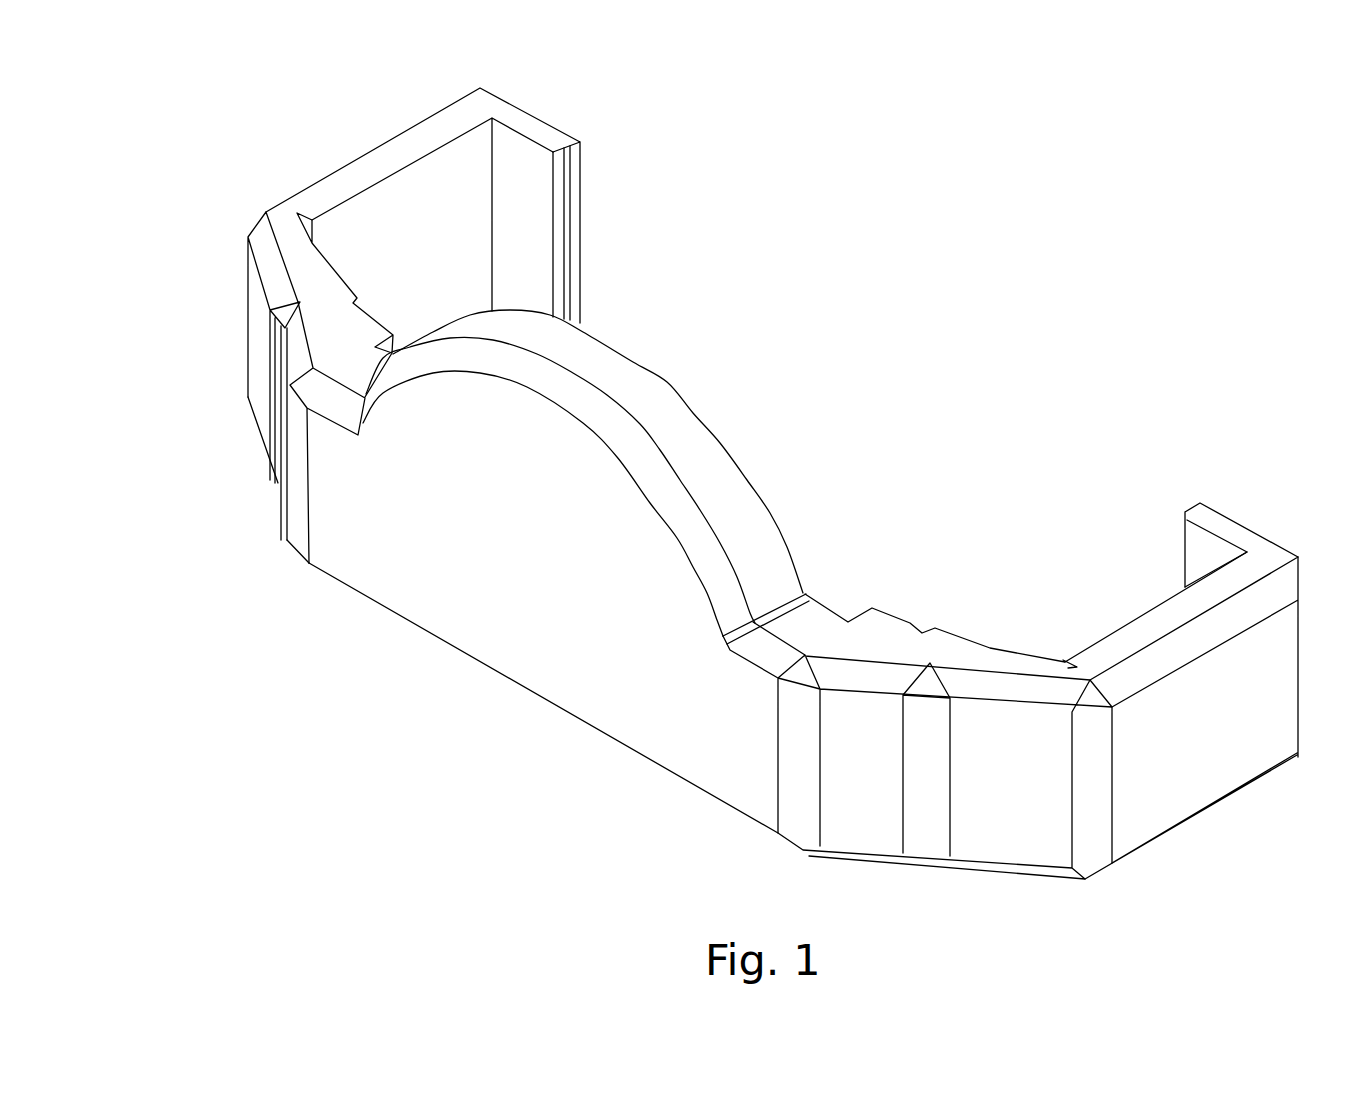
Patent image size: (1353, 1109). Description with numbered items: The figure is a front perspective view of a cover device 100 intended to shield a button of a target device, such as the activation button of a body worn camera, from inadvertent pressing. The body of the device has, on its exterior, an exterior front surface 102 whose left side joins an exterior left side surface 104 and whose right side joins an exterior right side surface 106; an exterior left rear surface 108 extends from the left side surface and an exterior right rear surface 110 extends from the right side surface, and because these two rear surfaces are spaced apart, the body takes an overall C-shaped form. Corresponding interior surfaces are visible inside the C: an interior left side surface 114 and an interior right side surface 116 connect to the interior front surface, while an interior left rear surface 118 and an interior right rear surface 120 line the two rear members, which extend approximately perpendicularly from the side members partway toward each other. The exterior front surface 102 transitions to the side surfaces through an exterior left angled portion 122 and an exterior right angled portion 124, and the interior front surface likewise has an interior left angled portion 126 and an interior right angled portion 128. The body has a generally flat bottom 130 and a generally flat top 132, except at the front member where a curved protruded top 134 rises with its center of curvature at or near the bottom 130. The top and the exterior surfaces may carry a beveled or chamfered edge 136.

The cover device 100 is at (700, 513).
The exterior front surface 102 is at (515, 586).
The exterior left side surface 104 is at (1187, 753).
The exterior right side surface 106 is at (338, 166).
The exterior left rear surface 108 is at (1242, 522).
The exterior right rear surface 110 is at (553, 127).
The interior left side surface 114 is at (1107, 630).
The interior right side surface 116 is at (395, 208).
The interior left rear surface 118 is at (1203, 563).
The interior right rear surface 120 is at (533, 192).
The exterior left angled portion 122 is at (980, 790).
The exterior right angled portion 124 is at (258, 367).
The interior left angled portion 126 is at (912, 622).
The interior right angled portion 128 is at (341, 270).
The bottom 130 is at (556, 706).
The flat top 132 is at (801, 630).
The protruded top 134 is at (588, 362).
The chamfered edge 136 is at (582, 402).